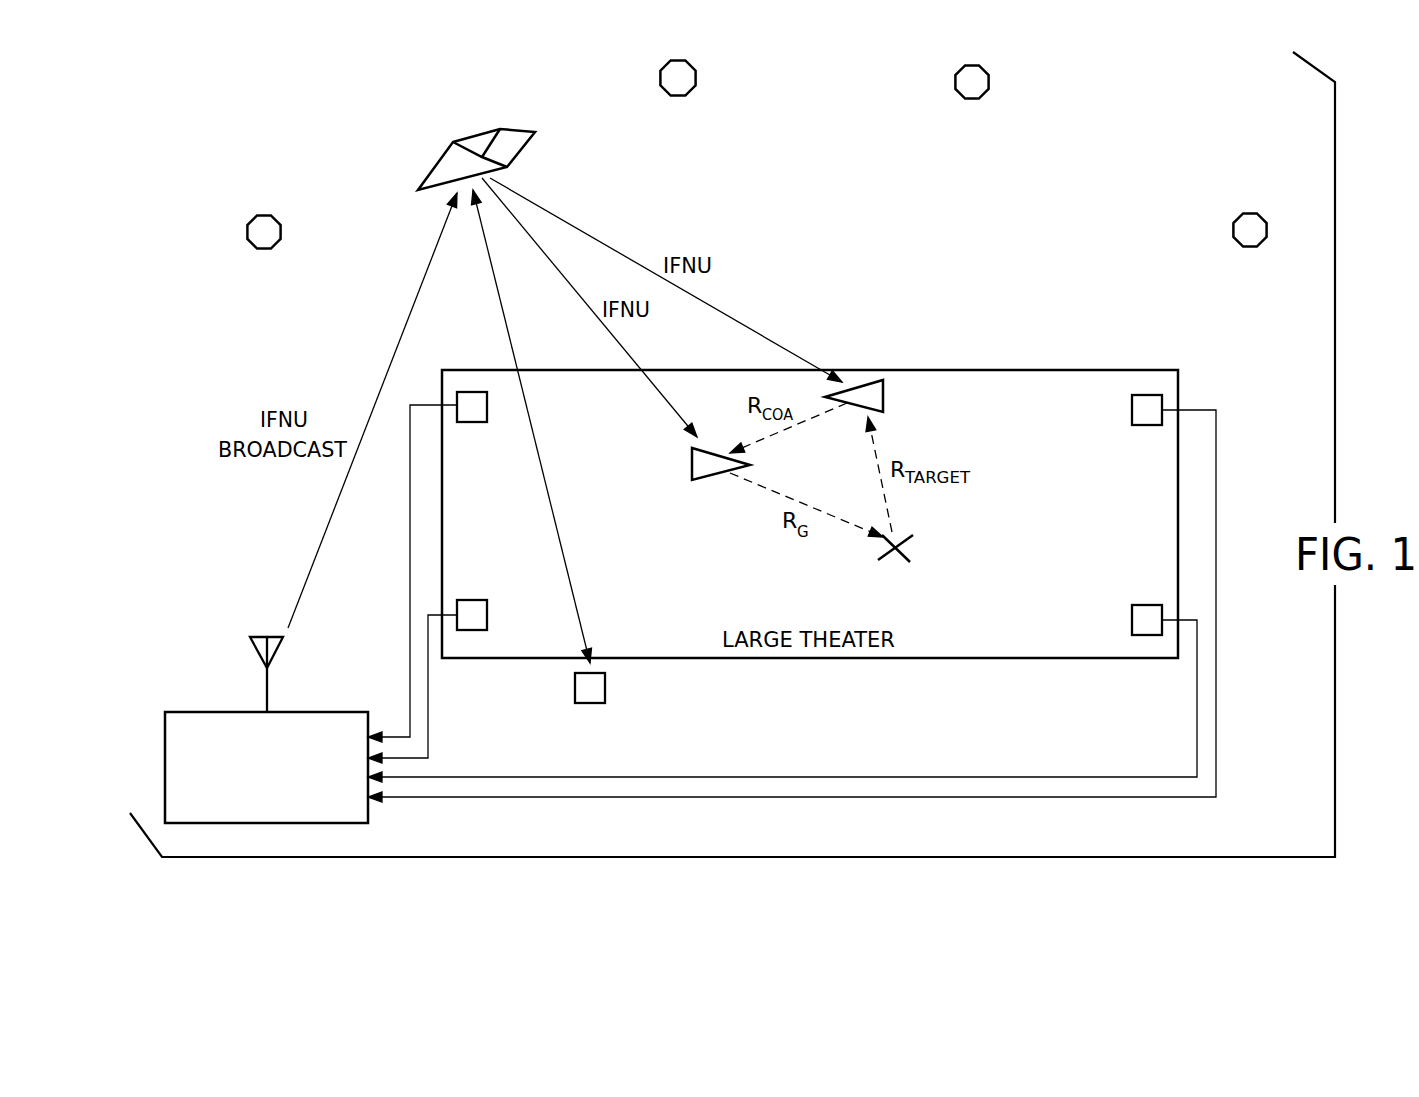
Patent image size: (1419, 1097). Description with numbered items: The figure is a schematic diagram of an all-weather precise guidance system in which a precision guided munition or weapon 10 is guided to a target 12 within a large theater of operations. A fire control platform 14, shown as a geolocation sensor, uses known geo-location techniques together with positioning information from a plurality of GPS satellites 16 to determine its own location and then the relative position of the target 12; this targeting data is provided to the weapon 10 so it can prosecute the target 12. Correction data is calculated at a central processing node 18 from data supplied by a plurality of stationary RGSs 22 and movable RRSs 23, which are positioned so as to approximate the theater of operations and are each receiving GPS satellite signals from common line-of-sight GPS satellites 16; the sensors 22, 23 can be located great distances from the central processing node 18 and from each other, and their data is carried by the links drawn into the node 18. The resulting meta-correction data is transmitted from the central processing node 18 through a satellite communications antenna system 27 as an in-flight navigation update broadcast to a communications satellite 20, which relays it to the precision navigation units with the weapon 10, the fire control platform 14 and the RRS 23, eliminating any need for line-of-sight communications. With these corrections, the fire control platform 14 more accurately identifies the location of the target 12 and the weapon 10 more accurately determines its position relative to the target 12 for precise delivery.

The precision guided munition 10 is at (703, 482).
The target 12 is at (910, 550).
The fire control platform 14 is at (867, 380).
The GPS satellite 16 is at (692, 90).
The central processing node 18 is at (330, 710).
The communications satellite 20 is at (477, 131).
The reference GPS sensor (RGS) 22 is at (473, 423).
The reference receiver station (RRS) 23 is at (595, 705).
The satellite communications antenna system 27 is at (250, 658).